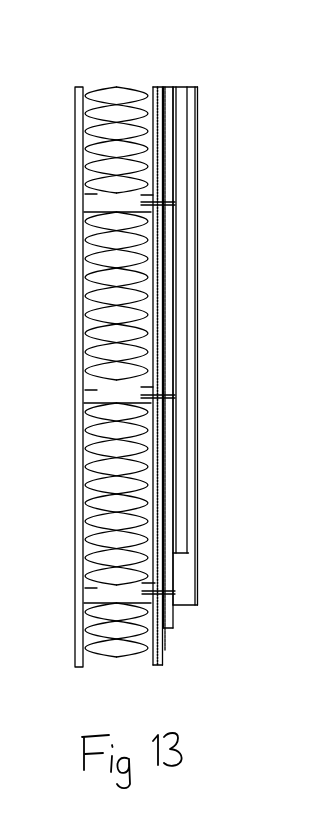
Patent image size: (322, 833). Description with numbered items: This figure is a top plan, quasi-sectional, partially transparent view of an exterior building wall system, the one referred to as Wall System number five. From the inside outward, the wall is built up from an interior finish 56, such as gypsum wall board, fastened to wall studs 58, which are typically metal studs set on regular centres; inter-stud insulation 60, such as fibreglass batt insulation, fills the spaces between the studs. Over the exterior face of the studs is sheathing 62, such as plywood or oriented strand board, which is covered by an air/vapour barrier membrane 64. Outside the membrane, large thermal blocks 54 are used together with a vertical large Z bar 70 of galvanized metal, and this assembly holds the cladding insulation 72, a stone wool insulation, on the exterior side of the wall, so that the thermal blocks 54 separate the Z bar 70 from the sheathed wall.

The large thermal block 54 is at (174, 627).
The interior finish 56 is at (80, 123).
The wall stud 58 is at (107, 213).
The inter-stud insulation 60 is at (85, 148).
The sheathing 62 is at (153, 660).
The air/vapour barrier membrane 64 is at (167, 649).
The large Z bar 70 is at (194, 90).
The cladding insulation 72 is at (176, 109).